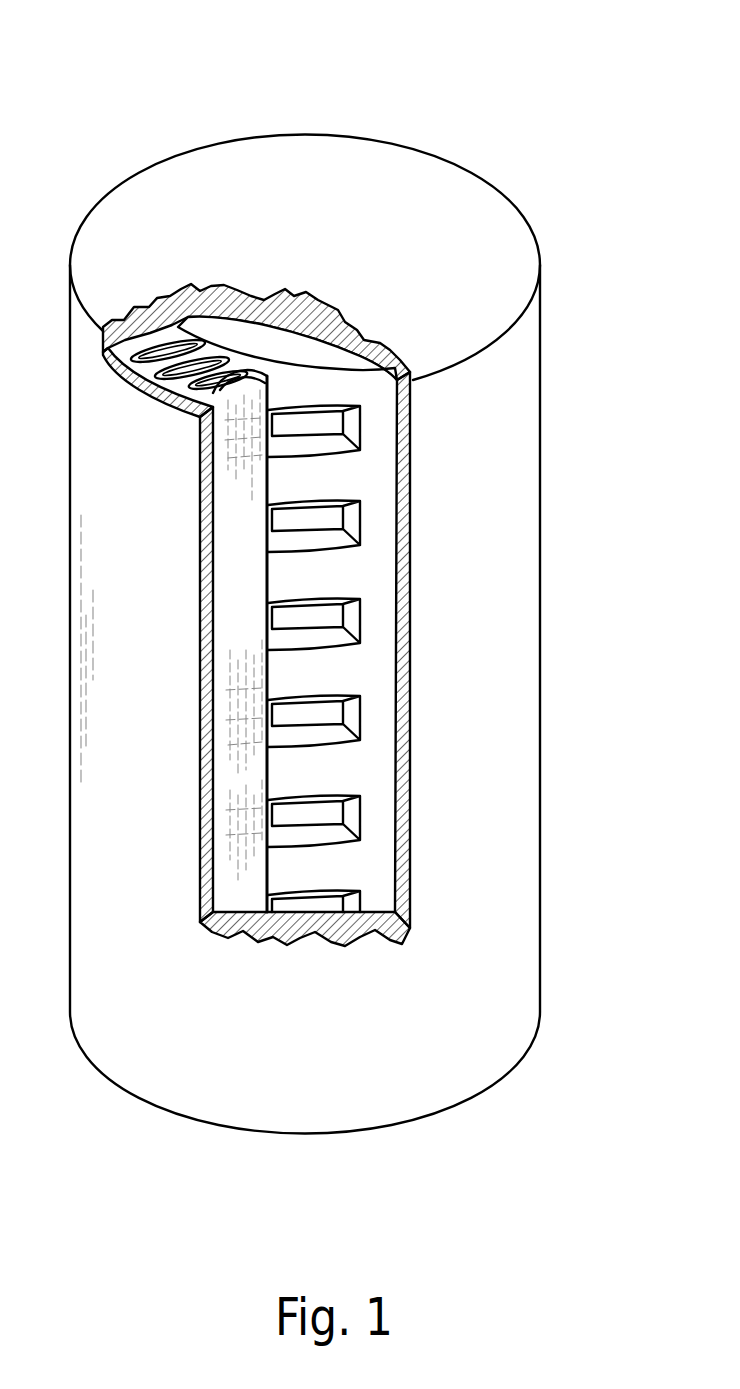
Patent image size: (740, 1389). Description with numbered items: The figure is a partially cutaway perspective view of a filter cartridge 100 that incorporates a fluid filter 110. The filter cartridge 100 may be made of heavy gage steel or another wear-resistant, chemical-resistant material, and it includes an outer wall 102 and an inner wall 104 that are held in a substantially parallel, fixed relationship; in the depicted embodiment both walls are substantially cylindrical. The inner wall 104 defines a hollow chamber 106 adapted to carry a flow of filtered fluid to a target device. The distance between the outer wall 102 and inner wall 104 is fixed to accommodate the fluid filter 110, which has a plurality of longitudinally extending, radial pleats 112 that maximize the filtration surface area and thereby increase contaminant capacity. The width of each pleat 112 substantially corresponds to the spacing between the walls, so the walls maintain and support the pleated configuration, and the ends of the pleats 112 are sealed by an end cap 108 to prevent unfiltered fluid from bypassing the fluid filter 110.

The filter cartridge 100 is at (158, 68).
The outer wall 102 is at (375, 470).
The inner wall 104 is at (508, 564).
The hollow chamber 106 is at (266, 335).
The end cap 108 is at (156, 187).
The fluid filter 110 is at (232, 508).
The pleats 112 is at (140, 368).